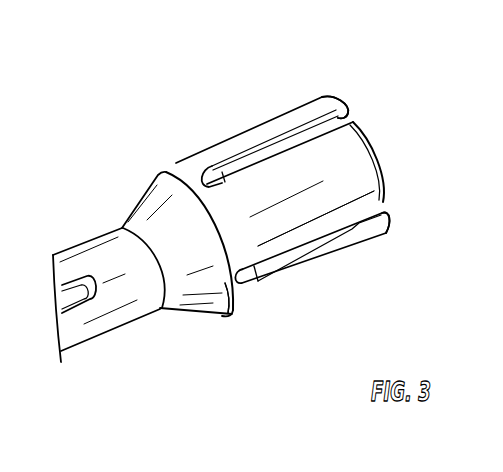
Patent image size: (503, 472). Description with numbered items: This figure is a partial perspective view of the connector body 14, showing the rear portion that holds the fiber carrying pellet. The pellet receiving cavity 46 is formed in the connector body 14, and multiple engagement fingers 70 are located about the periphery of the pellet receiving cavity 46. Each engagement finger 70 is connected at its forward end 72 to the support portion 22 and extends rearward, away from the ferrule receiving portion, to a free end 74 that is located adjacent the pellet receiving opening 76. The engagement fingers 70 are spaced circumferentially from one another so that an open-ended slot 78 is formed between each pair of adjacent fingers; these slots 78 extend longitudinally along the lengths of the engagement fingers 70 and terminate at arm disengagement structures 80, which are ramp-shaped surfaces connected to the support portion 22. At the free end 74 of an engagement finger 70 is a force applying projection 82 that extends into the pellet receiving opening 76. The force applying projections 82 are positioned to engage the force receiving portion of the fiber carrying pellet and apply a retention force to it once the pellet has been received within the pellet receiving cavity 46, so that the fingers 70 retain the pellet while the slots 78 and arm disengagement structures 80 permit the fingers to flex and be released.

The nozzle assembly 14 is at (143, 131).
The support portion 22 is at (186, 326).
The pellet receiving cavity 46 is at (384, 148).
The engagement fingers 70 is at (321, 110).
The forward ends 72 is at (234, 300).
The free ends 74 is at (392, 231).
The pellet receiving opening 76 is at (412, 200).
The open-ended slot 78 is at (288, 268).
The arm disengagement structures 80 is at (172, 170).
The force applying projection 82 is at (348, 116).